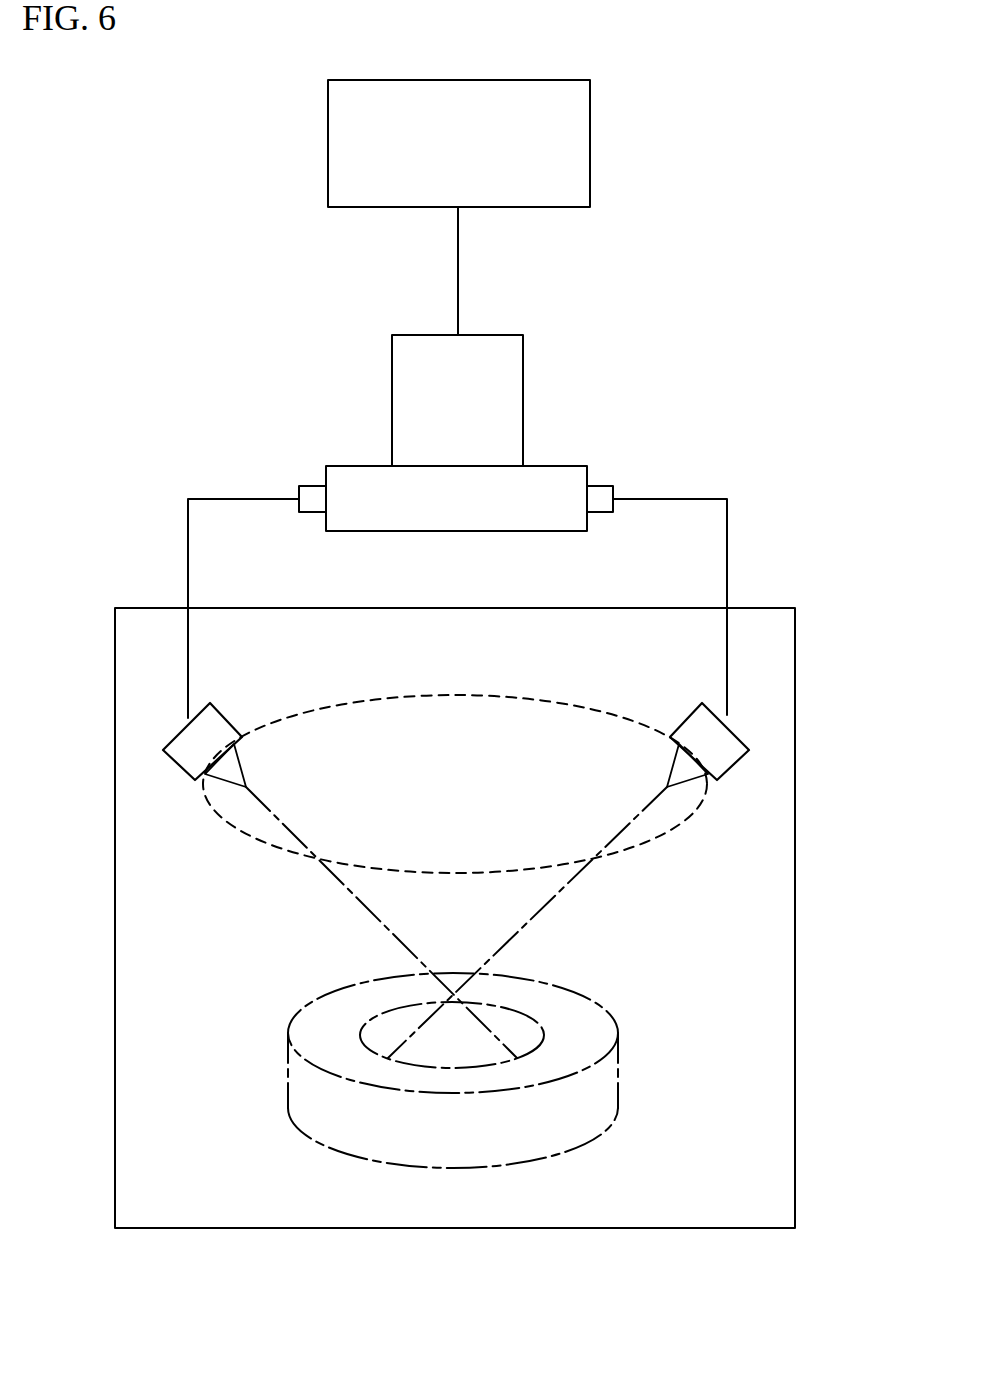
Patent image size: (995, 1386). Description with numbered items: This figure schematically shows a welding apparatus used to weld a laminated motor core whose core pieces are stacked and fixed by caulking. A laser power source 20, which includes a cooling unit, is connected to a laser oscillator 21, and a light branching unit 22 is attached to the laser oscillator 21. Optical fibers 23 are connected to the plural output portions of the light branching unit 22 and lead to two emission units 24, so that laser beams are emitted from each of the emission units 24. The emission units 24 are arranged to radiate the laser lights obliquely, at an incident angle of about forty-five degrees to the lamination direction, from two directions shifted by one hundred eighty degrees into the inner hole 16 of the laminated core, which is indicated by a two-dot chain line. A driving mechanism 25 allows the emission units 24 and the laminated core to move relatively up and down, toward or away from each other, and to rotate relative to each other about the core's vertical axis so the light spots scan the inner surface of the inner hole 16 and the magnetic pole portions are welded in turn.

The inner hole 16 is at (515, 1018).
The laser power source 20 is at (590, 150).
The laser oscillator 21 is at (523, 400).
The light branching unit 22 is at (344, 466).
The optical fibers 23 is at (188, 553).
The emission units 24 is at (180, 768).
The driving mechanism 25 is at (620, 1228).